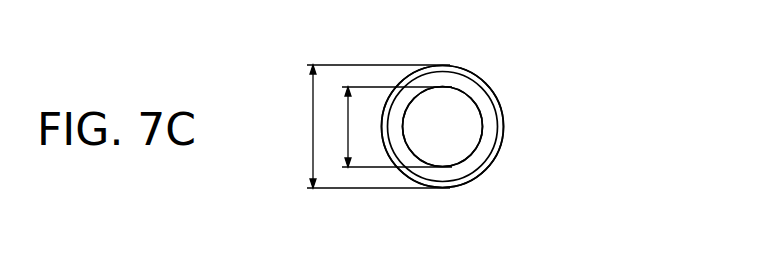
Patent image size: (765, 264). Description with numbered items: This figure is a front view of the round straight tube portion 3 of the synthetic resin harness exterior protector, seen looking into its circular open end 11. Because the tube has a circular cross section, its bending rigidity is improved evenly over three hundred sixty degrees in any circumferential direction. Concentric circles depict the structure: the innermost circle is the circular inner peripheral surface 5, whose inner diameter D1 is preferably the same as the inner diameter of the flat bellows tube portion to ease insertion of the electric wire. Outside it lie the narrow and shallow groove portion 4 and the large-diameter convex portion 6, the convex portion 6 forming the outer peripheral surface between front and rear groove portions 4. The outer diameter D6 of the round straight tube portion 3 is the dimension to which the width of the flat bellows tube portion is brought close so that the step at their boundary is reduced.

The round straight tube portion 3 is at (554, 63).
The groove portion 4 is at (498, 137).
The inner peripheral surface 5 is at (480, 110).
The convex portion 6 is at (503, 117).
The circular open end 11 is at (460, 153).
The outer diameter D6 is at (313, 138).
The inner diameter D1 is at (348, 138).